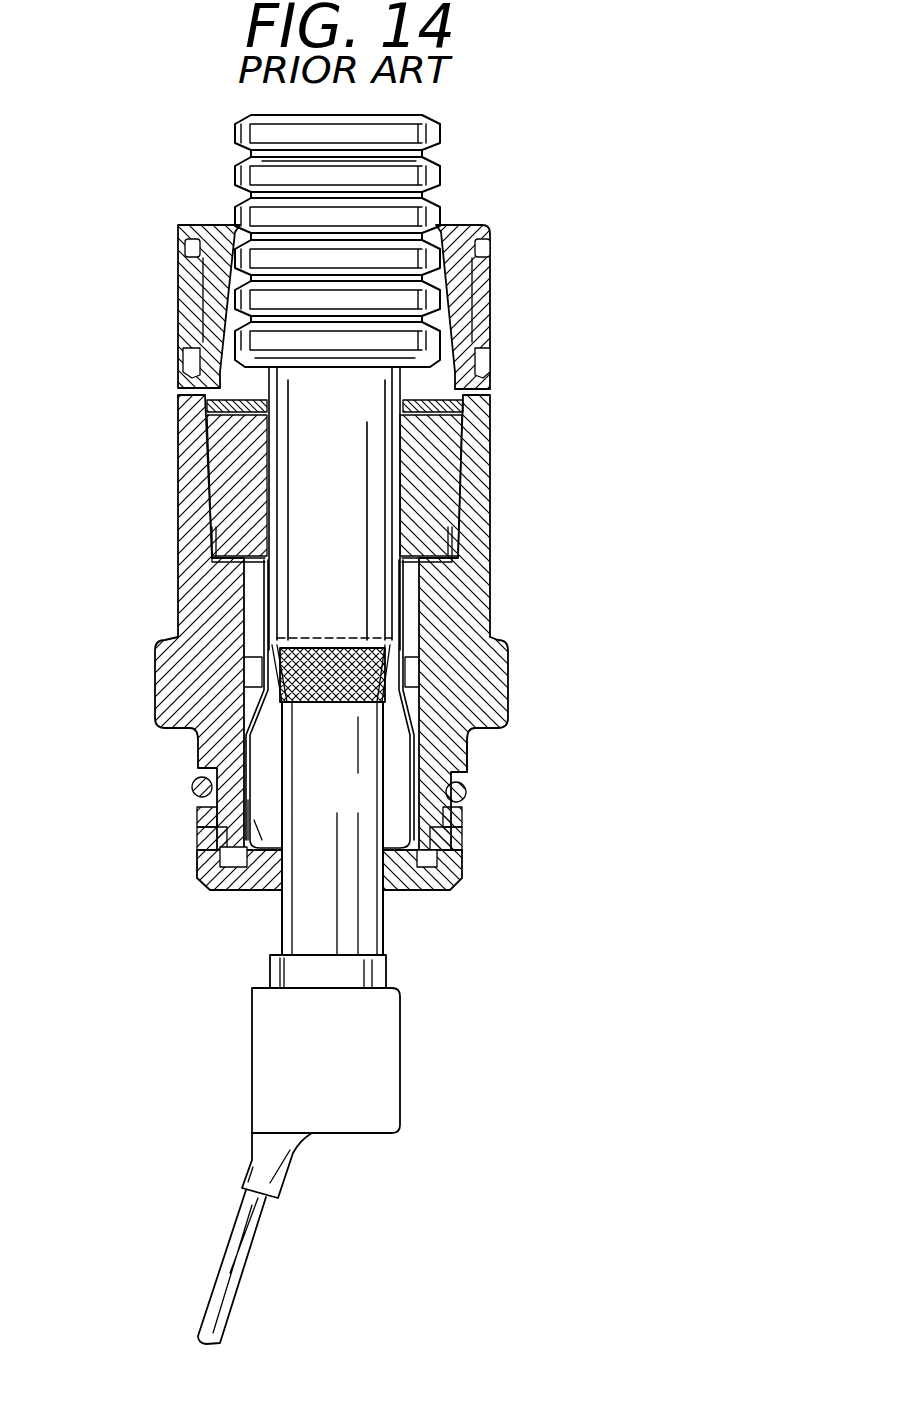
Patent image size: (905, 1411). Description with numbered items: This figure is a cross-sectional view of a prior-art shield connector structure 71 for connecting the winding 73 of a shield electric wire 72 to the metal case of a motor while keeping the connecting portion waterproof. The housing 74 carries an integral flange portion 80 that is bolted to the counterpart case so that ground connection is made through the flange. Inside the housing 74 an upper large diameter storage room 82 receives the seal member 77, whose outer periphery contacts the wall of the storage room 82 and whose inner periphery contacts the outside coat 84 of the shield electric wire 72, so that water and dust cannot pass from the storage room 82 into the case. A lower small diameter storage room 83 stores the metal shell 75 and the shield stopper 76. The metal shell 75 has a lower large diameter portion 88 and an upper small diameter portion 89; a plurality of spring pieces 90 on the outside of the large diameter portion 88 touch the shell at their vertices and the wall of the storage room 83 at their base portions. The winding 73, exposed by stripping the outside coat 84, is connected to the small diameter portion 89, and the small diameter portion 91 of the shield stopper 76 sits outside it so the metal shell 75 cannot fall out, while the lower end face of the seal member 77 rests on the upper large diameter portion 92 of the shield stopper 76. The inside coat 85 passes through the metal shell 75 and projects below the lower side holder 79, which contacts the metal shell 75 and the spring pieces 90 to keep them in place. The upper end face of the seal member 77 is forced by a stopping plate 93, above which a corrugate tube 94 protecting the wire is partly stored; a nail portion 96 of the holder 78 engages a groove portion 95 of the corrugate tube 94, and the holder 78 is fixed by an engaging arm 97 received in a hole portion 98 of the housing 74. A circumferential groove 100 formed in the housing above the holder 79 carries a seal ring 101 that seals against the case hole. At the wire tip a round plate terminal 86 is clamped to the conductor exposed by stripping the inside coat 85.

The coaxial connector 71 is at (613, 378).
The shield electric wire 72 is at (380, 930).
The winding 73 is at (327, 703).
The housing 74 is at (498, 565).
The metal shell 75 is at (200, 880).
The shield stopper 76 is at (257, 607).
The seal member 77 is at (207, 470).
The holder 78 is at (500, 220).
The lower side holder 79 is at (465, 883).
The flange portion 80 is at (155, 683).
The large diameter storage room 82 is at (455, 327).
The small diameter storage room 83 is at (412, 610).
The outside coat 84 is at (357, 480).
The inside coat 85 is at (300, 921).
The terminal 86 is at (230, 1243).
The large diameter portion 88 is at (227, 830).
The small diameter portion 89 is at (260, 685).
The spring pieces 90 is at (192, 785).
The small diameter portion 91 is at (258, 662).
The large diameter portion 92 is at (213, 548).
The stopping plate 93 is at (212, 408).
The corrugate tube 94 is at (442, 133).
The groove portion 95 is at (372, 187).
The nail portion 96 is at (468, 226).
The engaging arm 97 is at (480, 358).
The hole portion 98 is at (487, 382).
The circumferential groove 100 is at (468, 790).
The seal ring 101 is at (465, 803).